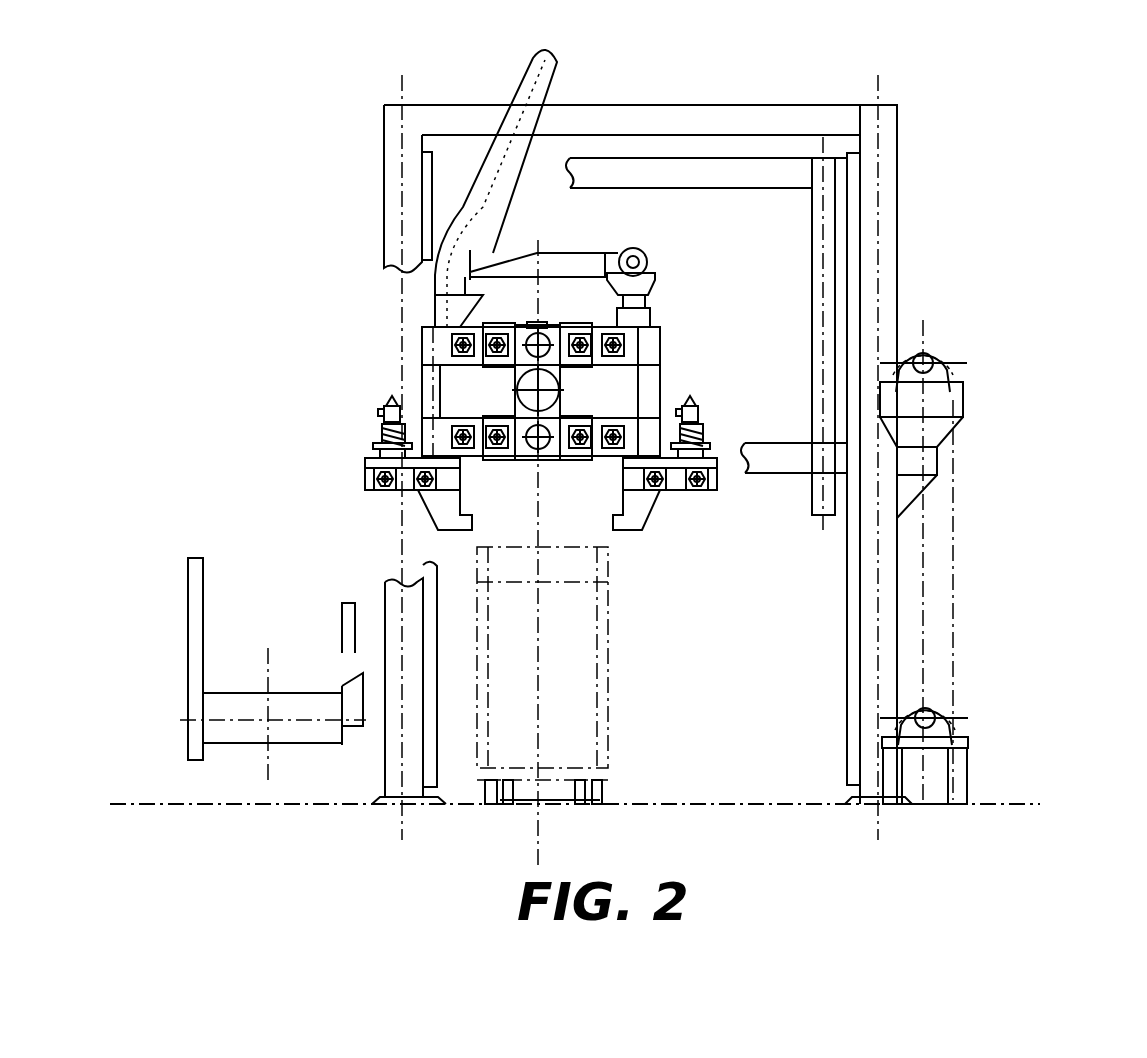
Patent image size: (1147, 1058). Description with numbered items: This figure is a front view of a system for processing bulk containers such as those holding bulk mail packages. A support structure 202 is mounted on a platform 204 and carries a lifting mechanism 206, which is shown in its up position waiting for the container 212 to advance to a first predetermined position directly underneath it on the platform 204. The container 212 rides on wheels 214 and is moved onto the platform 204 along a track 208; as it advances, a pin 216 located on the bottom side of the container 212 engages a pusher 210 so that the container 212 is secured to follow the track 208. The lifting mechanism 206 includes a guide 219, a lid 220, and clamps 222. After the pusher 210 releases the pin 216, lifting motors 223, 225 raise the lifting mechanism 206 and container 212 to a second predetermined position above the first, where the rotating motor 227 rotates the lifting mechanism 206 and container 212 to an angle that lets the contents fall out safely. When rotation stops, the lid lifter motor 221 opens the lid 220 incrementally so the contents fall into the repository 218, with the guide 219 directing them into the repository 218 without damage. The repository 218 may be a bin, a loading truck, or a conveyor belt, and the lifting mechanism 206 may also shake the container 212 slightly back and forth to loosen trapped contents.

The support structure 202 is at (388, 122).
The platform 204 is at (1015, 804).
The lifting mechanism 206 is at (420, 333).
The track 208 is at (543, 816).
The pusher 210 is at (572, 812).
The container 212 is at (580, 633).
The wheels 214 is at (600, 790).
The pin 216 is at (535, 800).
The repository 218 is at (205, 565).
The guide 219 is at (558, 62).
The lid 220 is at (583, 252).
The lid lifter motor 221 is at (650, 262).
The clamps 222 is at (440, 518).
The lifting motor 223 is at (950, 352).
The lifting motor 225 is at (955, 705).
The rotating motor 227 is at (560, 385).